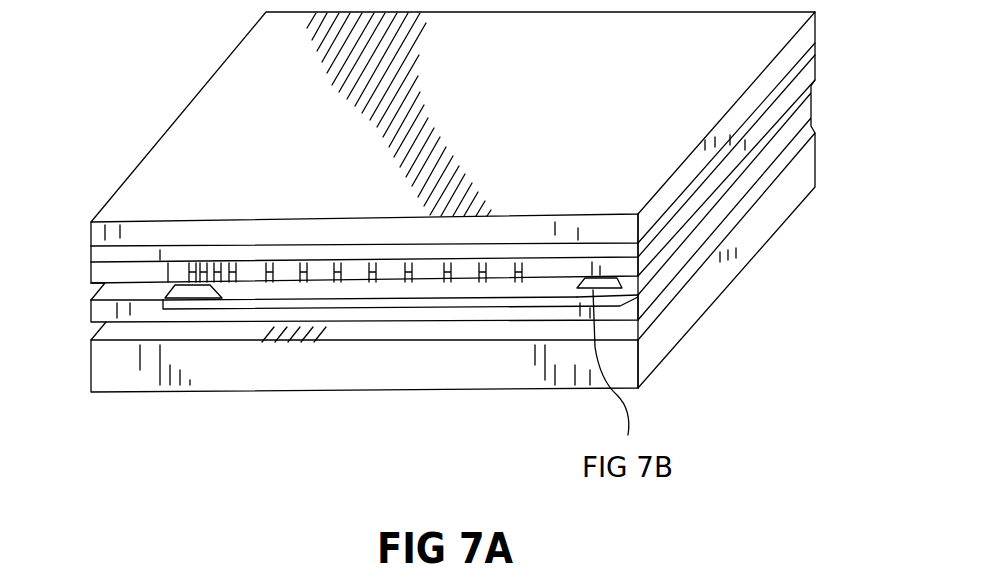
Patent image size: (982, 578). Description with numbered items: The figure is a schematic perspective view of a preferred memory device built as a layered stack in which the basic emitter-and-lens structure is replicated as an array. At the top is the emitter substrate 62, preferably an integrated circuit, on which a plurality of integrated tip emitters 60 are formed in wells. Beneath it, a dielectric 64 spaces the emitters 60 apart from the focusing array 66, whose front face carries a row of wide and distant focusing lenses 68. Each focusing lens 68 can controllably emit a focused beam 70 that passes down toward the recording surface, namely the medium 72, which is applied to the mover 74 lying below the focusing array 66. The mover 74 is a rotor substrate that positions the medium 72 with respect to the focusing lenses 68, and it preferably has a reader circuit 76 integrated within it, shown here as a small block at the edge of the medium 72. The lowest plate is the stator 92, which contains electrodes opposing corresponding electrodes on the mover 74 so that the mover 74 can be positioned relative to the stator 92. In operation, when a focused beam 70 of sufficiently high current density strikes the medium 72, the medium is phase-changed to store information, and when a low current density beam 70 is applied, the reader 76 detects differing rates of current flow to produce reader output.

The integrated tip emitters 60 is at (317, 243).
The emitter substrate 62 is at (91, 236).
The dielectric 64 is at (91, 258).
The focusing array 66 is at (91, 277).
The focusing lenses 68 is at (483, 263).
The focused beam 70 is at (207, 287).
The medium 72 is at (452, 303).
The mover 74 is at (815, 104).
The reader circuit 76 is at (618, 290).
The stator 92 is at (813, 190).